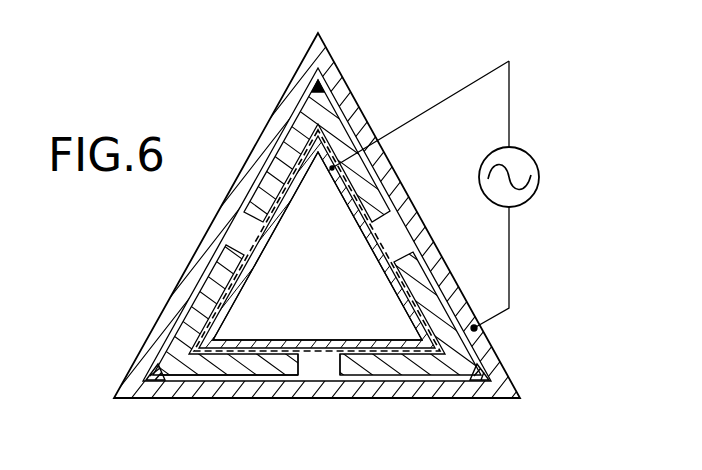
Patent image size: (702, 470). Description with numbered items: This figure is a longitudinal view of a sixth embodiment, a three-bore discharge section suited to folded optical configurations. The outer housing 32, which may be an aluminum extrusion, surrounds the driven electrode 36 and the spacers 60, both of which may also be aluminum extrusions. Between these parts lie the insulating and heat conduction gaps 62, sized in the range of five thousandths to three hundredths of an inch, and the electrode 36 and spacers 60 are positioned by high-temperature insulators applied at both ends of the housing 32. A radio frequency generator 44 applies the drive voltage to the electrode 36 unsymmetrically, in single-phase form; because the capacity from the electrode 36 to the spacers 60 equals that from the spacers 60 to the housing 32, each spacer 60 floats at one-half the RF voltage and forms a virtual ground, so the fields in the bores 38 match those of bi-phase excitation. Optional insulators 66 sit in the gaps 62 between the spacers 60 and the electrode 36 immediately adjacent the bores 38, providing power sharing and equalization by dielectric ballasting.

The housing 32 is at (226, 207).
The electrode 36 is at (258, 237).
The bores 38 is at (320, 366).
The radio frequency generator 44 is at (532, 157).
The spacers 60 is at (318, 103).
The insulating and heat conduction gaps 62 is at (257, 377).
The insulators 66 is at (348, 199).